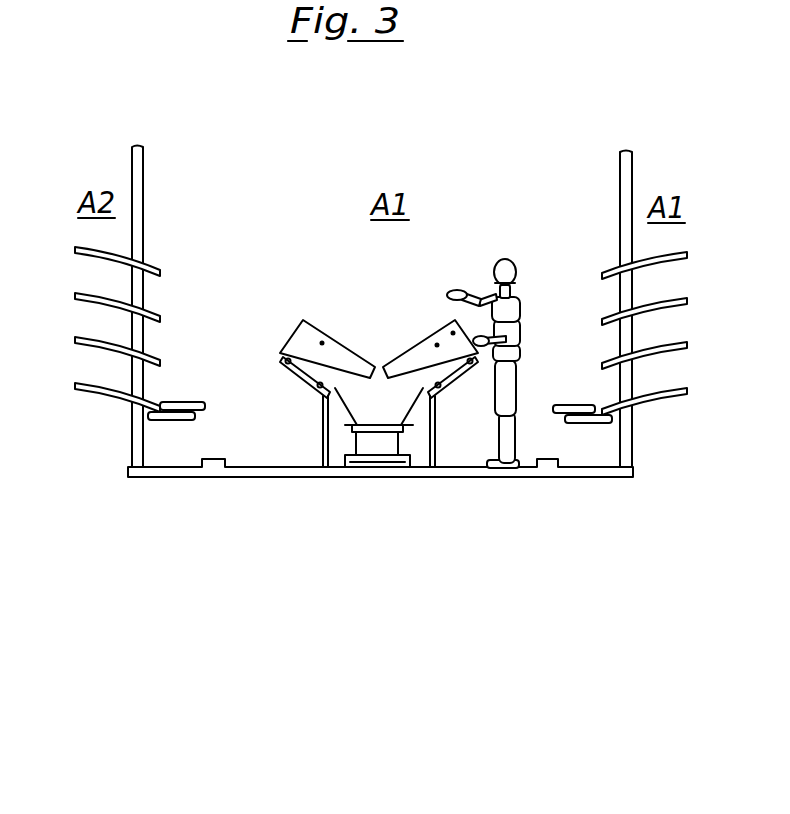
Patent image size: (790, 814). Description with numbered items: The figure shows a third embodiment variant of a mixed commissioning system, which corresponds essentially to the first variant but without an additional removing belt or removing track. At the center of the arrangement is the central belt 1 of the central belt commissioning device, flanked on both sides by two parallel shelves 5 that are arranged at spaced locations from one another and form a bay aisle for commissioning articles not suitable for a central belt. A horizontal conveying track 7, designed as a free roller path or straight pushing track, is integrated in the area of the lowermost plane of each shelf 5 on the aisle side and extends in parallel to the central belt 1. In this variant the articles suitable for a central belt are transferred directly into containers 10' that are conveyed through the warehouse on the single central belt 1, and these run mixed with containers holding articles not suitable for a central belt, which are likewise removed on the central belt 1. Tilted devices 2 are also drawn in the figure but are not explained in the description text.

The central belt 1 is at (397, 468).
The tilted picking trays 2 is at (422, 352).
The shelves 5 is at (605, 272).
The horizontal conveying track 7 is at (573, 407).
The containers 10' is at (349, 506).